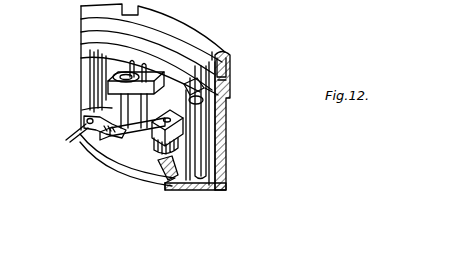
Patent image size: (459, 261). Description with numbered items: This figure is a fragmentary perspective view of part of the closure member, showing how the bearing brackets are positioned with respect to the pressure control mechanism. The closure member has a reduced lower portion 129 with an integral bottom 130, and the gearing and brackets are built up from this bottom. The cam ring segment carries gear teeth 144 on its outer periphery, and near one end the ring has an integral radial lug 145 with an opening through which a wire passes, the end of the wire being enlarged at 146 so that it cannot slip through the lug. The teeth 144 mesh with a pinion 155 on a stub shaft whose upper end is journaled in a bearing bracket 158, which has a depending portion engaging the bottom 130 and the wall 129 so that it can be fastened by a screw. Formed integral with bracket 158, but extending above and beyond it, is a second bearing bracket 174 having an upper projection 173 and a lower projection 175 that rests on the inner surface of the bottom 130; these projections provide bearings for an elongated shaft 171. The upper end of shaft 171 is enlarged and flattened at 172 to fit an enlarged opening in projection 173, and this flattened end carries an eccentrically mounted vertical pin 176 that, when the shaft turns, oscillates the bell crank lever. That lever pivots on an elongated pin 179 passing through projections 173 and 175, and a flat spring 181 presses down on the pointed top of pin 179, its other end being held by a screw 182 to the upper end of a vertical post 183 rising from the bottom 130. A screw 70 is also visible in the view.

The screw 70 is at (66, 141).
The reduced lower portion 129 is at (226, 148).
The bottom 130 is at (193, 186).
The gear teeth 144 is at (226, 164).
The radial lug 145 is at (84, 124).
The enlarged end 146 is at (112, 108).
The pinion 155 is at (184, 128).
The bearing bracket 158 is at (198, 120).
The elongated shaft 171 is at (122, 103).
The enlarged flattened upper end 172 is at (116, 74).
The upper projection 173 is at (214, 55).
The bearing bracket 174 is at (222, 82).
The lower projection 175 is at (134, 122).
The eccentric vertical pin 176 is at (134, 66).
The elongated pin 179 is at (190, 76).
The flat spring 181 is at (228, 66).
The screw 182 is at (218, 94).
The vertical post 183 is at (148, 170).